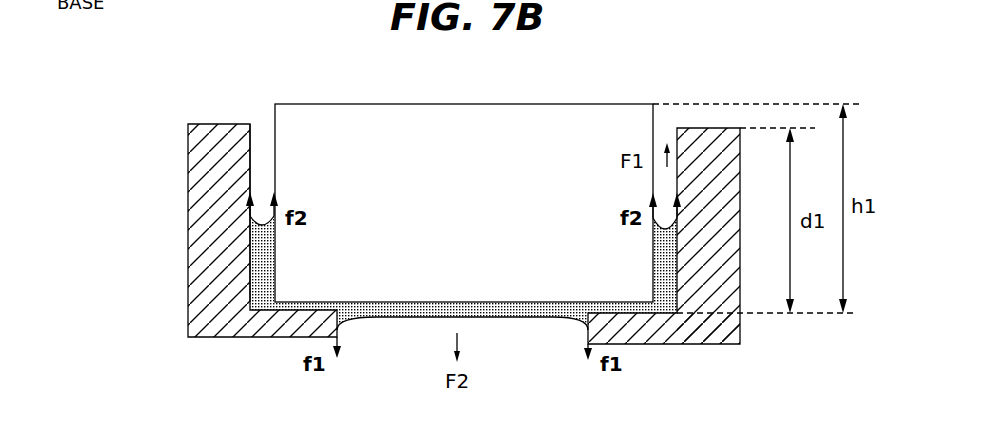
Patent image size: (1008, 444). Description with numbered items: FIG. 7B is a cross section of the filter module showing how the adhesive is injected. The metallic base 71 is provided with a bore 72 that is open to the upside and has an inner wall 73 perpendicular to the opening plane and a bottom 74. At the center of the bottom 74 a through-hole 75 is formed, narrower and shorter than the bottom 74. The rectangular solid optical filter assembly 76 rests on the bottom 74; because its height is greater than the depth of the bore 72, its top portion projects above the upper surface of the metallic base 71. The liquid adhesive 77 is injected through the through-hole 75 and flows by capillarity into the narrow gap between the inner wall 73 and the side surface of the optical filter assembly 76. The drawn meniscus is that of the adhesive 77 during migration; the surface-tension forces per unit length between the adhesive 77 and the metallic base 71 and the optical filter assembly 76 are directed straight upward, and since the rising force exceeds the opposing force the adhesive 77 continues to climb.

The metallic base 71 is at (380, 187).
The bore 72 is at (262, 123).
The inner wall 73 is at (250, 160).
The bottom 74 is at (293, 305).
The through-hole 75 is at (406, 322).
The optical filter assembly 76 is at (522, 125).
The adhesive 77 is at (516, 318).